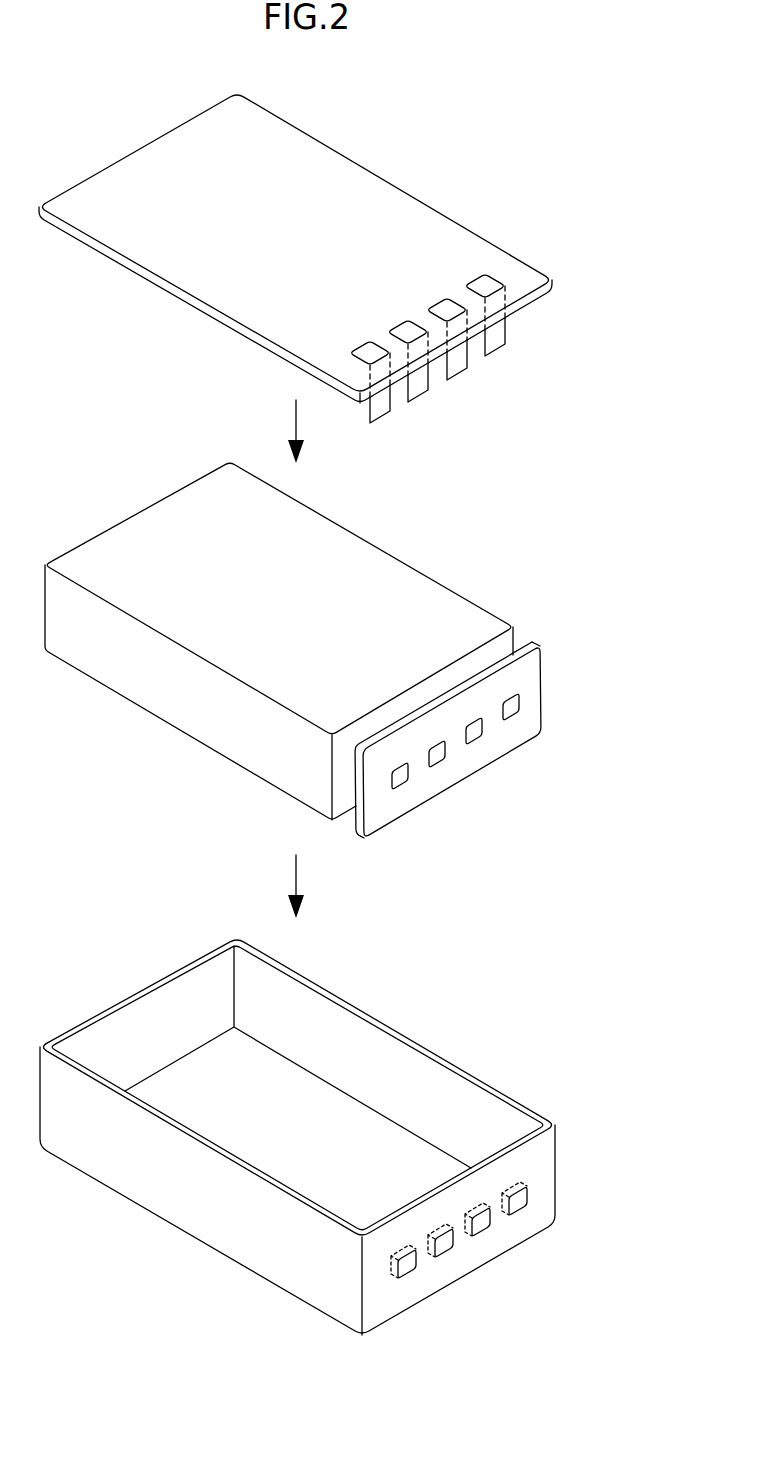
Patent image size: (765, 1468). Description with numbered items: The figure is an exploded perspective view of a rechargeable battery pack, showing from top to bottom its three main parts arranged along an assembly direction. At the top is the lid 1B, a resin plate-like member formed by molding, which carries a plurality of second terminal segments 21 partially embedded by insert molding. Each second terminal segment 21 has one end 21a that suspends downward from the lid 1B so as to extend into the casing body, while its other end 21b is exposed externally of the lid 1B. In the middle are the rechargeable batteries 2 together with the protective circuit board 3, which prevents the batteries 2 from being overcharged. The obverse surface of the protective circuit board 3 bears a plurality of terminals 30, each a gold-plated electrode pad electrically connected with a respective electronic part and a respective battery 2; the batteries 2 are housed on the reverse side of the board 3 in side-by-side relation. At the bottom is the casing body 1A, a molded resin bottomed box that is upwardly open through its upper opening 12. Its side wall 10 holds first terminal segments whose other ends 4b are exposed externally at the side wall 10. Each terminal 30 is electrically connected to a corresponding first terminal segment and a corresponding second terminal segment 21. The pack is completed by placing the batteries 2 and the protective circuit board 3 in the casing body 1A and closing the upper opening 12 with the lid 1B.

The lid 1B is at (382, 171).
The second terminal segment 21 is at (476, 313).
The end of second terminal segment 21a is at (505, 338).
The other end of second terminal segment 21b is at (442, 297).
The rechargeable battery 2 is at (422, 567).
The protective circuit board 3 is at (478, 727).
The terminal 30 is at (504, 719).
The casing body 1A is at (331, 1120).
The side wall 10 is at (331, 1137).
The upper opening 12 is at (285, 1018).
The other end of first terminal segment 4b is at (521, 1208).